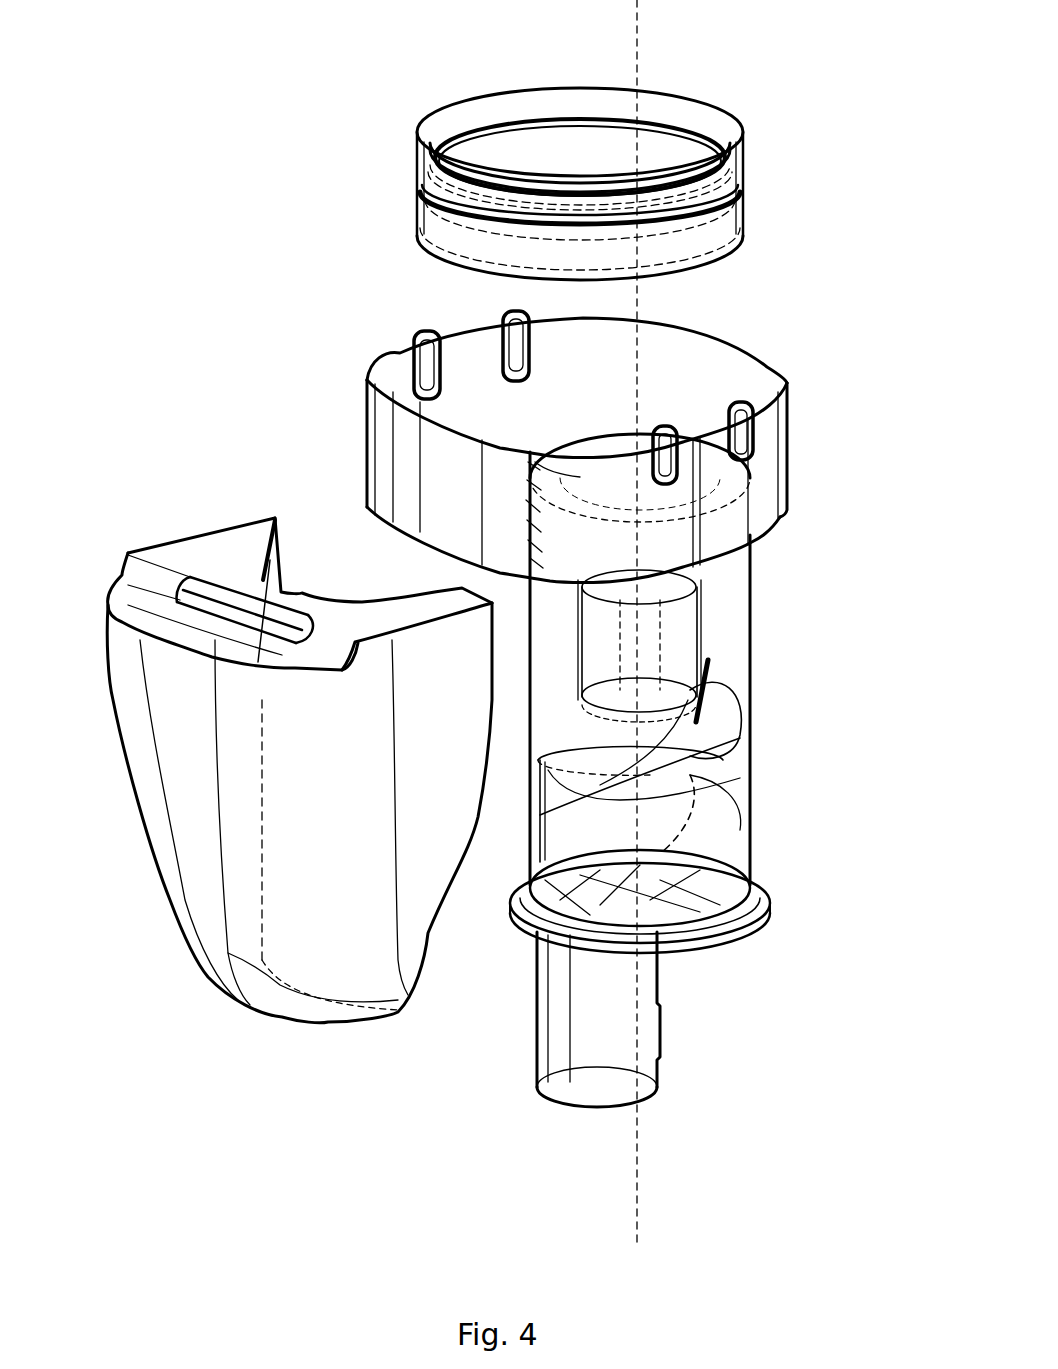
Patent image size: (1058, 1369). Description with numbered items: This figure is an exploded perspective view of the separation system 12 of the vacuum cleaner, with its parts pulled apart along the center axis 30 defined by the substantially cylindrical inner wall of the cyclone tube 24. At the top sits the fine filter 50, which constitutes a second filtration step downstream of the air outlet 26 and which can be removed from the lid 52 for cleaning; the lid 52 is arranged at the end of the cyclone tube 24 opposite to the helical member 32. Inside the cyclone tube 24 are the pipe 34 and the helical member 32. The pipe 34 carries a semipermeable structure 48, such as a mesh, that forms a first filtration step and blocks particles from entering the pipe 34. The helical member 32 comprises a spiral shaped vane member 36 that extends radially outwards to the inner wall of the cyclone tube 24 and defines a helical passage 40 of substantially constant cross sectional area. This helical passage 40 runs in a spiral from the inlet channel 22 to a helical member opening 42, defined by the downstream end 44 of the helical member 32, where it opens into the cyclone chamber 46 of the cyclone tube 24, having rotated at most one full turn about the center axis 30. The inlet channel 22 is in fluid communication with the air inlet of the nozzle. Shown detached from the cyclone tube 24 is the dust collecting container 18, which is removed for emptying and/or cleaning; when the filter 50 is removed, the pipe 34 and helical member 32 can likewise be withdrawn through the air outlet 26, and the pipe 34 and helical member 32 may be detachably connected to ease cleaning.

The separation system 12 is at (240, 82).
The dust collecting container 18 is at (193, 825).
The inlet channel 22 is at (556, 1015).
The cyclone tube 24 is at (720, 560).
The air outlet 26 is at (703, 483).
The center axis 30 is at (638, 46).
The helical member 32 is at (717, 822).
The pipe 34 is at (683, 565).
The vane member 36 is at (740, 740).
The helical passage 40 is at (695, 797).
The helical member opening 42 is at (725, 768).
The downstream end 44 is at (712, 695).
The cyclone chamber 46 is at (723, 617).
The semipermeable structure 48 is at (667, 647).
The fine filter 50 is at (745, 157).
The lid 52 is at (377, 450).